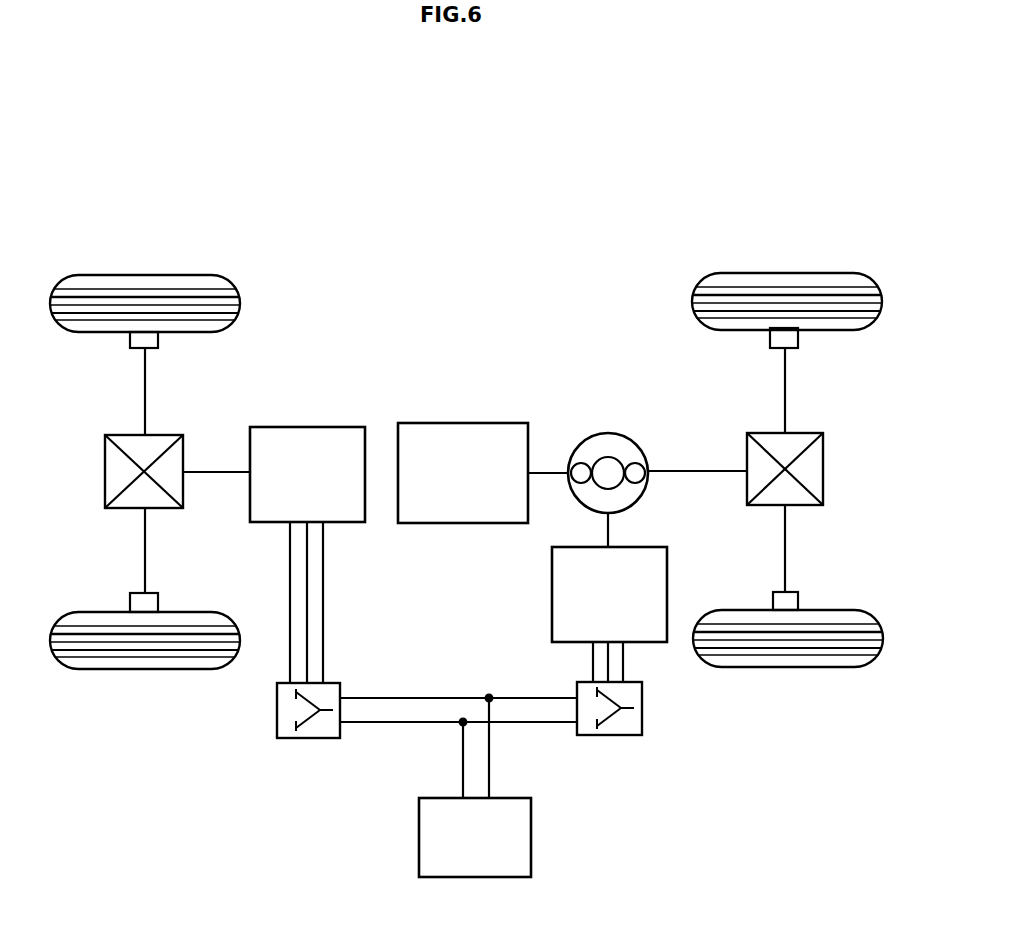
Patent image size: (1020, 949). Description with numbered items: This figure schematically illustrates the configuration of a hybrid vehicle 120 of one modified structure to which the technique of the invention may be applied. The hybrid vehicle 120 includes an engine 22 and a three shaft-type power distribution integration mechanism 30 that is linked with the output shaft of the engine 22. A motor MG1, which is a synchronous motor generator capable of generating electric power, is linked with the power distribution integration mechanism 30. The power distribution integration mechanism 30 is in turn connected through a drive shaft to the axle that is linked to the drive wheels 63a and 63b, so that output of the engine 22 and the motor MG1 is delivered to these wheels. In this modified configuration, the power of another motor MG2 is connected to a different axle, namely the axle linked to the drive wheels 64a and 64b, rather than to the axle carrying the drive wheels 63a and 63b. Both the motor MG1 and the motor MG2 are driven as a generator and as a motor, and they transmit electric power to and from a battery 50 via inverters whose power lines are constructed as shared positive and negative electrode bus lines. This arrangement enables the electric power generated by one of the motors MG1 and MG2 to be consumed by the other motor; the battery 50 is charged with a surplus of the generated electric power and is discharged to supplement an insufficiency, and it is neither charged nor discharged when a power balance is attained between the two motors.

The hybrid vehicle 120 is at (470, 226).
The drive wheel 64a is at (145, 275).
The drive wheel 64b is at (147, 669).
The drive wheel 63a is at (785, 272).
The drive wheel 63b is at (788, 667).
The motor MG2 is at (305, 427).
The motor MG1 is at (552, 594).
The engine 22 is at (462, 423).
The power distribution integration mechanism 30 is at (608, 433).
The battery 50 is at (531, 835).